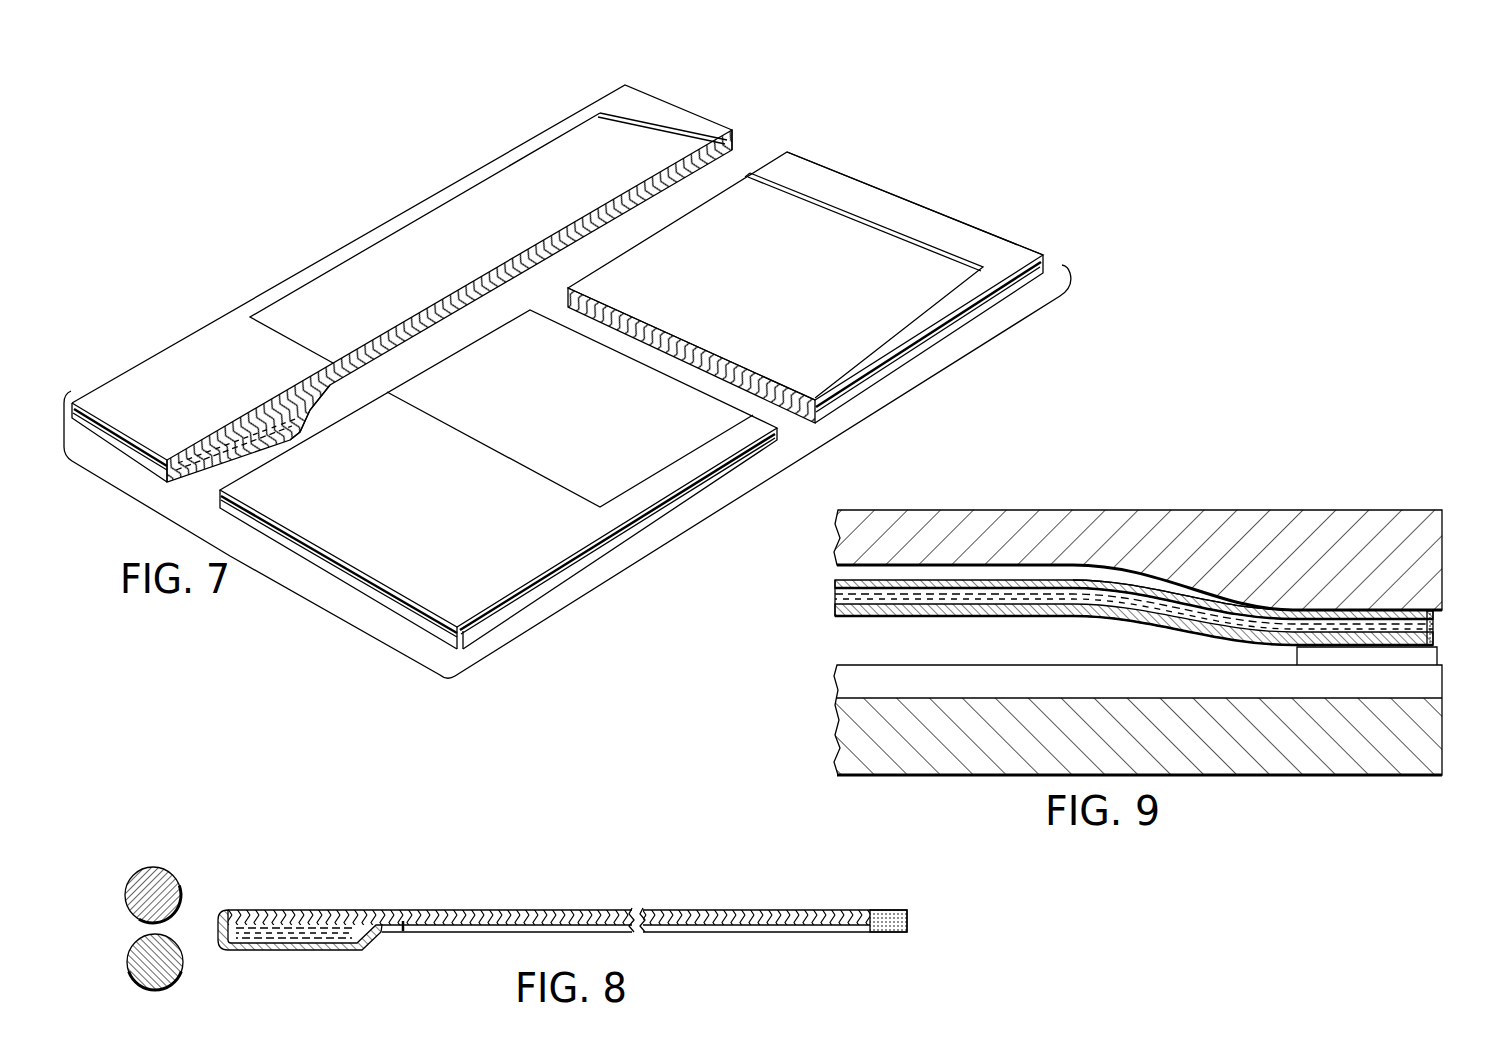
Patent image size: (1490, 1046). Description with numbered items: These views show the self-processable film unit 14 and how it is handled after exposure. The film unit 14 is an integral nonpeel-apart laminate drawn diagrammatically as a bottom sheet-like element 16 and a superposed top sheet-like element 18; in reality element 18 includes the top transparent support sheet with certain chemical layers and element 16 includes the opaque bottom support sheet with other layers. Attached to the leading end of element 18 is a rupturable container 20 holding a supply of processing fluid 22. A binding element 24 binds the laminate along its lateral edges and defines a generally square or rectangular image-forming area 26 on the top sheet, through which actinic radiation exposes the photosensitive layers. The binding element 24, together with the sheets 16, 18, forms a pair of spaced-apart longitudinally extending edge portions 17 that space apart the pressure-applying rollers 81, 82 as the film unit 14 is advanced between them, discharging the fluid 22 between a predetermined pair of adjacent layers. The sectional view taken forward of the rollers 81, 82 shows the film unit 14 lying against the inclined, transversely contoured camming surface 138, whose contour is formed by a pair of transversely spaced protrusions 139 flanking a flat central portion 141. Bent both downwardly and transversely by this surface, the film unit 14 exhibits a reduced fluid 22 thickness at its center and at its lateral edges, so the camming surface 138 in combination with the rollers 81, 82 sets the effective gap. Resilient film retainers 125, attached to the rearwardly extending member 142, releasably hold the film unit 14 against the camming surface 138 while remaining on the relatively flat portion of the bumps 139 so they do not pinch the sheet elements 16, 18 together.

In FIG. 7, the self-processable film unit 14 is at (784, 287).
In FIG. 8, the self-processable film unit 14 is at (426, 911).
In FIG. 7, the bottom sheet-like element 16 is at (520, 272).
In FIG. 9, the bottom sheet-like element 16 is at (834, 611).
In FIG. 8, the bottom sheet-like element 16 is at (590, 927).
In FIG. 7, the longitudinally extending edge portions 17 is at (446, 189).
In FIG. 7, the top sheet-like element 18 is at (503, 268).
In FIG. 9, the top sheet-like element 18 is at (834, 584).
In FIG. 8, the top sheet-like element 18 is at (431, 905).
In FIG. 7, the rupturable container 20 is at (293, 407).
In FIG. 8, the rupturable container 20 is at (352, 947).
In FIG. 7, the processing fluid 22 is at (212, 456).
In FIG. 9, the processing fluid 22 is at (834, 598).
In FIG. 8, the processing fluid 22 is at (315, 941).
In FIG. 7, the binding element 24 is at (893, 206).
In FIG. 9, the binding element 24 is at (1434, 621).
In FIG. 8, the binding element 24 is at (383, 910).
In FIG. 7, the image-forming area 26 is at (786, 298).
In FIG. 8, the image-forming area 26 is at (750, 911).
In FIG. 8, the pressure-applying roller 81 is at (181, 866).
In FIG. 8, the pressure-applying roller 82 is at (180, 952).
In FIG. 9, the resilient film retainers 125 is at (1440, 650).
In FIG. 9, the camming surface 138 is at (833, 567).
In FIG. 9, the protrusions 139 is at (1247, 604).
In FIG. 9, the flat central portion 141 is at (1010, 562).
In FIG. 9, the rearwardly extending member 142 is at (1445, 760).